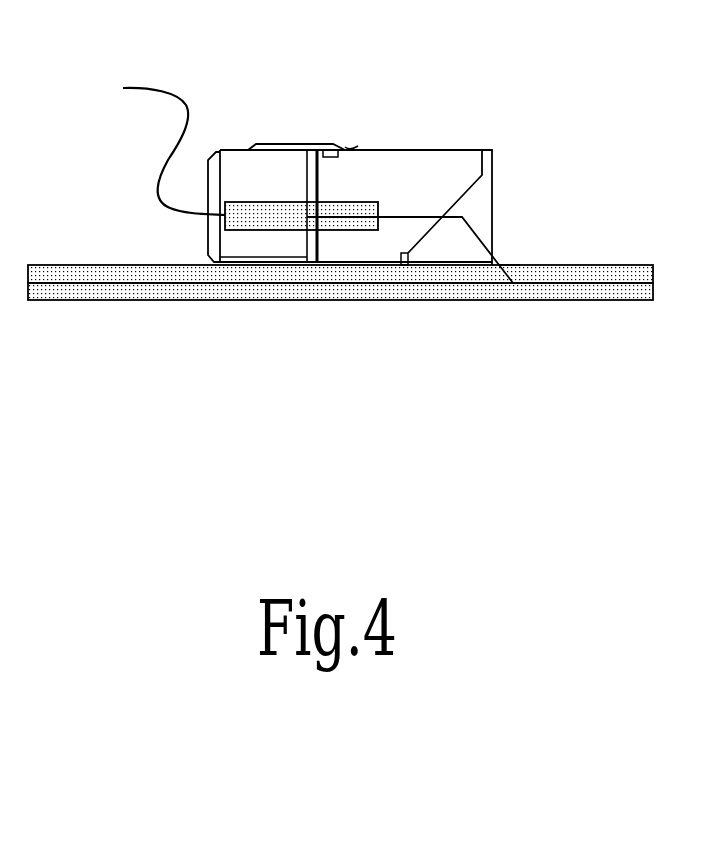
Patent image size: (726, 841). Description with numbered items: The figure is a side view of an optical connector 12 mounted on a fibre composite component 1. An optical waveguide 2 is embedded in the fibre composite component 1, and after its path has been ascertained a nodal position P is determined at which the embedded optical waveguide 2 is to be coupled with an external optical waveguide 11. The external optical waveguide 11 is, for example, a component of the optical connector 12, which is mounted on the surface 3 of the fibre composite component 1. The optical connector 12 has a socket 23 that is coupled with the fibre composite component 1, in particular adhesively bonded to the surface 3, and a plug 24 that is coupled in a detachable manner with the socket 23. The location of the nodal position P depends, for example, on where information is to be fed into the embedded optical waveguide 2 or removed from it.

The fibre composite component 1 is at (340, 287).
The optical waveguide 2 is at (202, 283).
The surface 3 is at (83, 265).
The external optical waveguide 11 is at (478, 230).
The optical connector 12 is at (418, 145).
The socket 23 is at (372, 182).
The plug 24 is at (244, 172).
The nodal position P is at (517, 260).